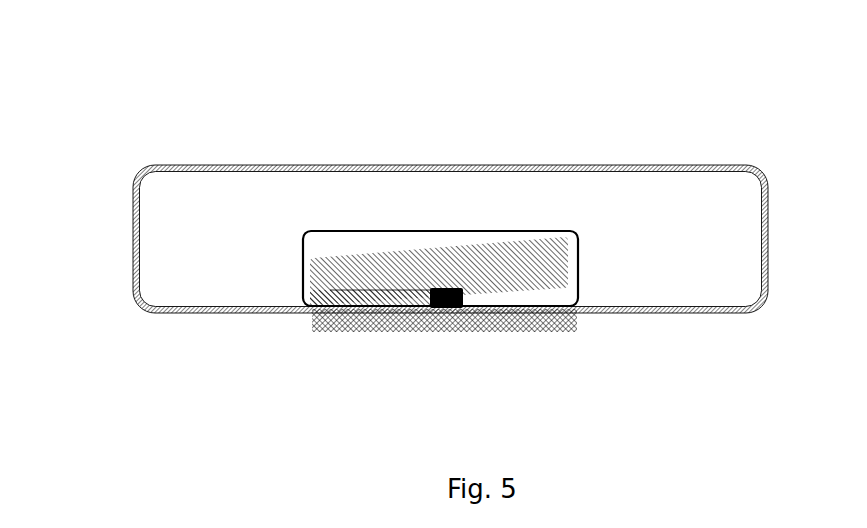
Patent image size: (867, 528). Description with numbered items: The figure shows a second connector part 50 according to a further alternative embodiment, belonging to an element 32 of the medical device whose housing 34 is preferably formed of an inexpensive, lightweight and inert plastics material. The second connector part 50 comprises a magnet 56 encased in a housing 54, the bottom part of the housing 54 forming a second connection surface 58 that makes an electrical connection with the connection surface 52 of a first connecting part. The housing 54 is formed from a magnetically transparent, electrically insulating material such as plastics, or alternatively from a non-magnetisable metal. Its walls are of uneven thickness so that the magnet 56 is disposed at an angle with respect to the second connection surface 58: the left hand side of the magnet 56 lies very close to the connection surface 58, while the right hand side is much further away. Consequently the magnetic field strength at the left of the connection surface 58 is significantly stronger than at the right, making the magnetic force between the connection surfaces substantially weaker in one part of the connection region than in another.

The element 32 is at (108, 117).
The housing 34 is at (327, 168).
The second connector part 50 is at (475, 197).
The connection surface 52 is at (477, 317).
The housing 54 is at (308, 253).
The magnet 56 is at (333, 287).
The second connection surface 58 is at (512, 310).